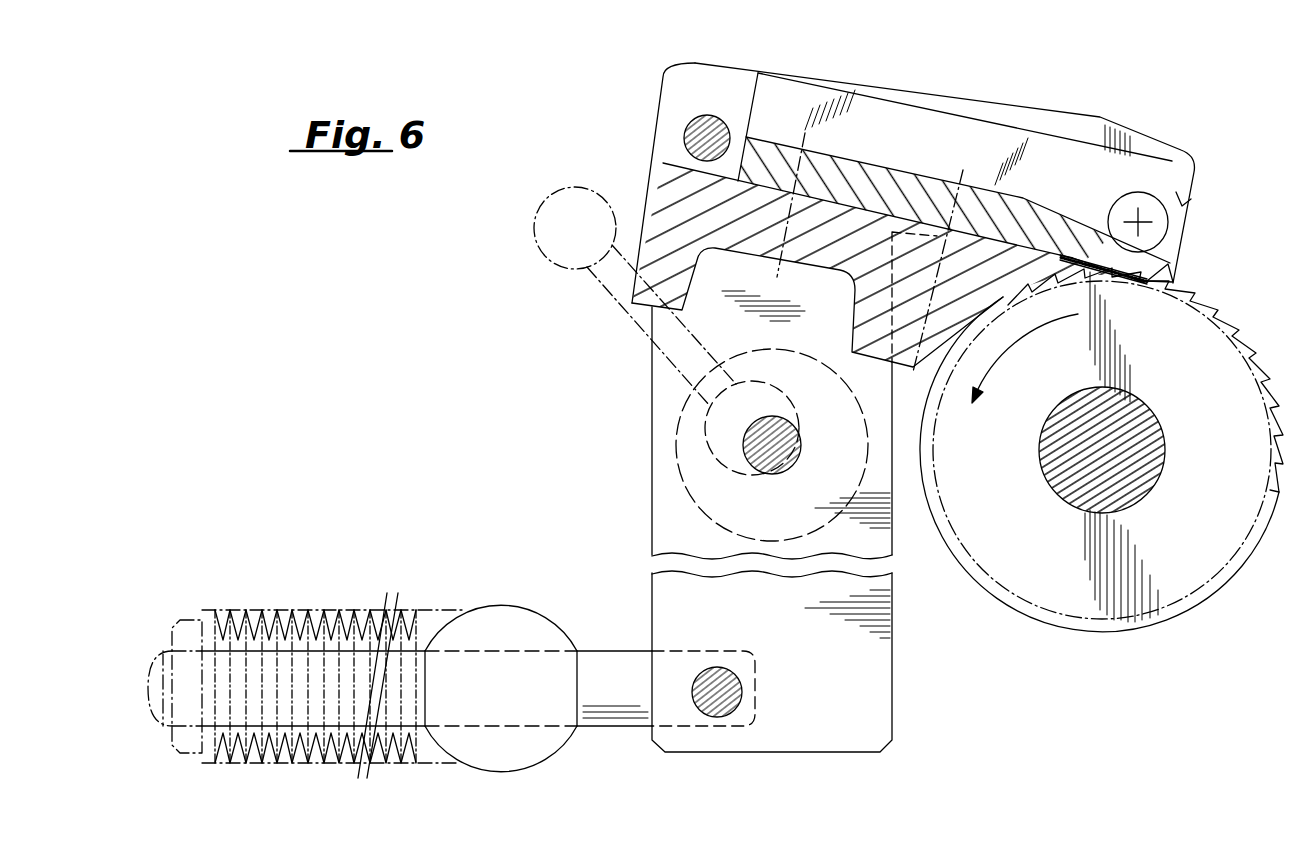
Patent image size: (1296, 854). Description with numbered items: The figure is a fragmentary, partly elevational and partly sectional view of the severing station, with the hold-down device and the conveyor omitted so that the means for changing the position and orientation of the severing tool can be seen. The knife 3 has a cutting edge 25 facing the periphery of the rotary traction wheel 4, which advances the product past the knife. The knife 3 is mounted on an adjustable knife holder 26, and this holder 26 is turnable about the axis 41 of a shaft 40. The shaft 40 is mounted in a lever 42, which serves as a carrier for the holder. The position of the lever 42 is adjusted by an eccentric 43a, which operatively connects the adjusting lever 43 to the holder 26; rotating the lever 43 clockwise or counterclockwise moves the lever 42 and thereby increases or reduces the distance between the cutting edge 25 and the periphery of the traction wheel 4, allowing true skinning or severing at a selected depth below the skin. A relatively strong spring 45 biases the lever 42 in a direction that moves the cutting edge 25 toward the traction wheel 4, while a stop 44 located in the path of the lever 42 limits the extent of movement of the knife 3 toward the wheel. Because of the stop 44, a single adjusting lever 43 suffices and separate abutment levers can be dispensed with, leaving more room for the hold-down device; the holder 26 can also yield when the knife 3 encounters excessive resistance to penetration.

The knife 3 is at (1168, 281).
The traction wheel 4 is at (1226, 368).
The cutting edge 25 is at (1153, 277).
The knife holder 26 is at (1058, 170).
The shaft 40 is at (1152, 222).
The axis 41 is at (1140, 221).
The lever 42 is at (662, 585).
The lever 43 is at (573, 268).
The eccentric 43a is at (698, 457).
The stop 44 is at (688, 135).
The spring 45 is at (360, 596).